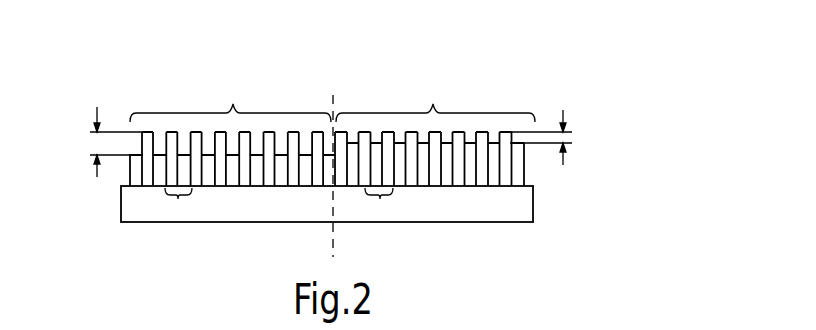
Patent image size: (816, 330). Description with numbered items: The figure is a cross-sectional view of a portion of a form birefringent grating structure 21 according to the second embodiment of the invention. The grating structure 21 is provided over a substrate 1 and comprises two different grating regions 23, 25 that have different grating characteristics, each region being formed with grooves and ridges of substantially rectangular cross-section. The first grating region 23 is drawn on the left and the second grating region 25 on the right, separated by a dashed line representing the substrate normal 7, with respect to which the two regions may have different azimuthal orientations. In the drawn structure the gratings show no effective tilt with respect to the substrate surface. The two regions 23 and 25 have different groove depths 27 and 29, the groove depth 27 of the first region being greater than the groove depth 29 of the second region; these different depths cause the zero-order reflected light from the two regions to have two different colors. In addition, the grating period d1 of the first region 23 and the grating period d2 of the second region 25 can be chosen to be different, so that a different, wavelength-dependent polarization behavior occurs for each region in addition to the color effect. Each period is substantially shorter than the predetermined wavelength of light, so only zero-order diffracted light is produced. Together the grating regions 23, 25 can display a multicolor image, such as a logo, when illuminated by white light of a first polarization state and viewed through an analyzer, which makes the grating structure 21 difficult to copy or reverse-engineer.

The substrate 1 is at (525, 200).
The form birefringent grating structure 21 is at (541, 52).
The substrate normal 7 is at (333, 91).
The first grating region 23 is at (230, 100).
The second grating region 25 is at (435, 100).
The groove depth of first region 27 is at (102, 142).
The groove depth of second region 29 is at (557, 137).
The grating period of first region d1 is at (178, 199).
The grating period of second region d2 is at (380, 199).